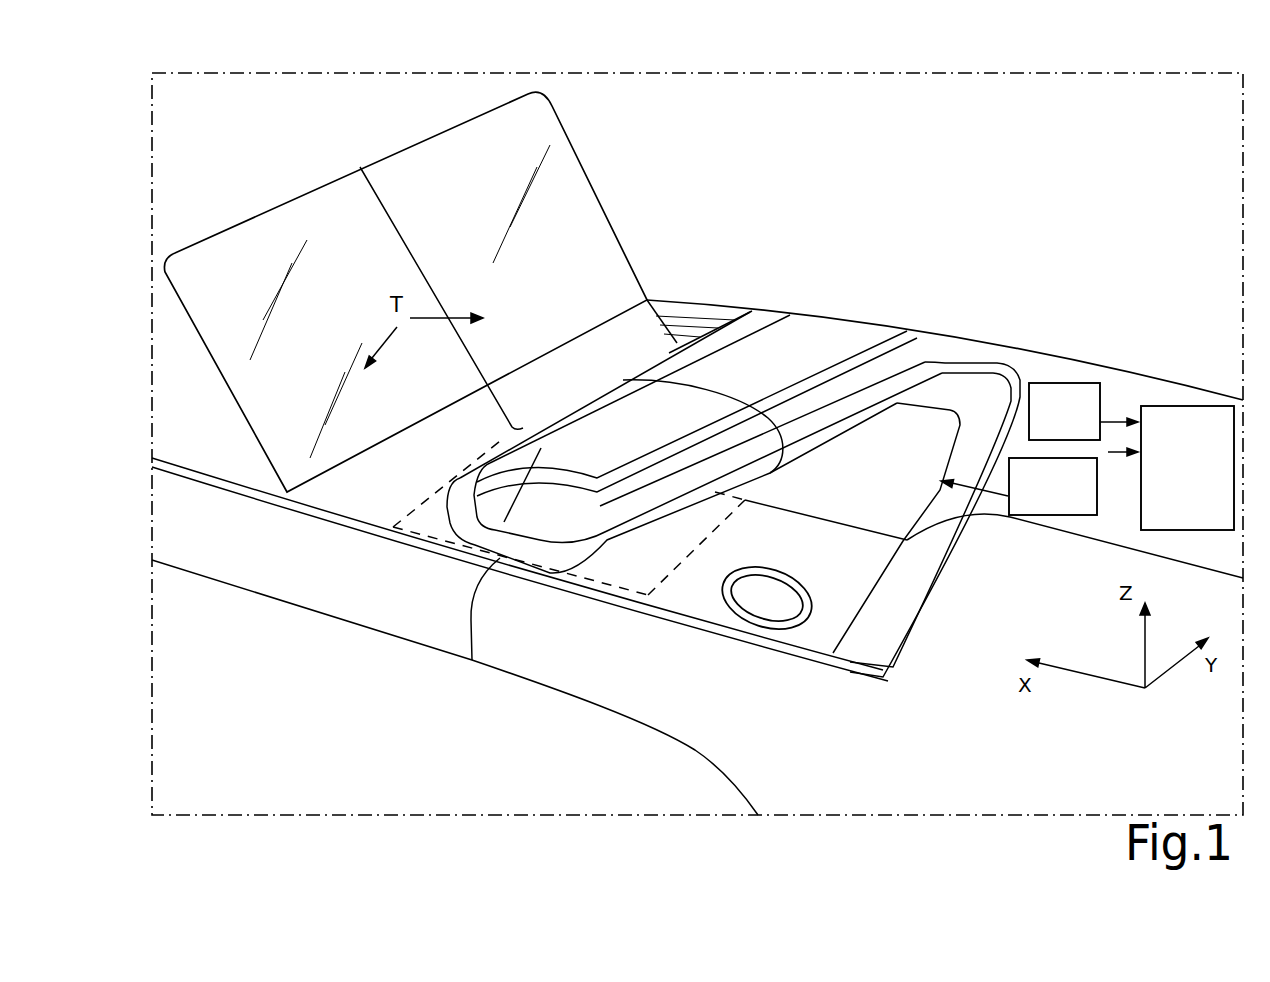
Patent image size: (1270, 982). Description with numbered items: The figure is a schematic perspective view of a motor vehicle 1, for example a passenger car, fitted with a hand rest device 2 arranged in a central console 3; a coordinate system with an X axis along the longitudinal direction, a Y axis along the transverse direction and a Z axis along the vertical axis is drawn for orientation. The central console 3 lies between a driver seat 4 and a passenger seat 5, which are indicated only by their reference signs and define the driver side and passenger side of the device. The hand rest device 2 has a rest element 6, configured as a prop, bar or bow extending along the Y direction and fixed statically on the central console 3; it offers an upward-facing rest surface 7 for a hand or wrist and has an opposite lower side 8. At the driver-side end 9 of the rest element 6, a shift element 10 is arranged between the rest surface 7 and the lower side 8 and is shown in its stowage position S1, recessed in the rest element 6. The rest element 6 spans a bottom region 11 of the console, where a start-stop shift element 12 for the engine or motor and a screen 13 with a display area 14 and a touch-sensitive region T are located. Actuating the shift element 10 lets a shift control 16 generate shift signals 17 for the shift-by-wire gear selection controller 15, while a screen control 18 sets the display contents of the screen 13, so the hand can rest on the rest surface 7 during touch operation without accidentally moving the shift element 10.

The motor vehicle 1 is at (291, 72).
The hand rest device 2 is at (828, 187).
The central console 3 is at (1113, 370).
The driver seat 4 is at (388, 760).
The passenger seat 5 is at (920, 277).
The rest element 6 is at (660, 473).
The rest surface 7 is at (761, 320).
The lower side 8 is at (640, 532).
The driver-side end 9 is at (542, 440).
The shift element 10 is at (468, 526).
The bottom region 11 is at (770, 540).
The start-stop shift element 12 is at (812, 586).
The screen 13 is at (672, 582).
The display area 14 is at (617, 566).
The shift-by-wire gear selection controller 15 is at (1174, 406).
The shift control 16 is at (1060, 382).
The shift signals 17 is at (1113, 453).
The screen control 18 is at (1058, 517).
The stowage position S1 is at (454, 468).